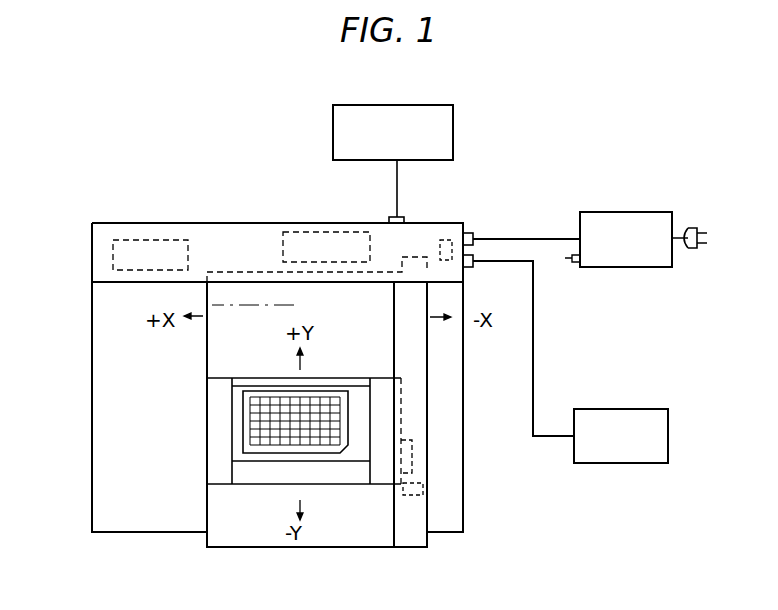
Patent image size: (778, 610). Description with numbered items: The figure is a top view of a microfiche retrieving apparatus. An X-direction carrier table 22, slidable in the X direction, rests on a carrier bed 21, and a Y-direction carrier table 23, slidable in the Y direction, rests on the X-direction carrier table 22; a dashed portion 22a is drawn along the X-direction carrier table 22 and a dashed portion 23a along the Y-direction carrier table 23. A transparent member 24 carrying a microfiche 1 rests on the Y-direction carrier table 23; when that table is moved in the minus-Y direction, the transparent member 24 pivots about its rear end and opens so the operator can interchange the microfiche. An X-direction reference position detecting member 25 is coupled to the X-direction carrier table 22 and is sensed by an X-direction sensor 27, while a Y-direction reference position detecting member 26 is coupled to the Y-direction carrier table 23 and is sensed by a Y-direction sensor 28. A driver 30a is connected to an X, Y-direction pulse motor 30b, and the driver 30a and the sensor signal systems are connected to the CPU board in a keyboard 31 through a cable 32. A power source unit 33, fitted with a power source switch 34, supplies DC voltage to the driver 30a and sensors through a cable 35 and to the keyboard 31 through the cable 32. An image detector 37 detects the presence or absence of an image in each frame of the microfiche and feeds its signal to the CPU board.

The specimen 1 is at (348, 410).
The carrier bed 21 is at (92, 508).
The X-direction carrier table 22 is at (350, 538).
The X stage guide 22a is at (383, 272).
The Y-direction carrier table 23 is at (350, 478).
The Y stage guide 23a is at (401, 392).
The transparent member 24 is at (361, 395).
The X-direction reference position detecting member 25 is at (418, 256).
The Y-direction reference position detecting member 26 is at (412, 455).
The X-direction sensor 27 is at (452, 240).
The Y-direction sensor 28 is at (423, 489).
The driver 30a is at (328, 228).
The X, Y-direction motor (pulse motor) 30b is at (145, 240).
The keyboard 31 is at (622, 463).
The cable 32 is at (533, 352).
The power source unit 33 is at (640, 267).
The power source switch 34 is at (570, 263).
The cable 35 is at (518, 233).
The image detector 37 is at (453, 128).